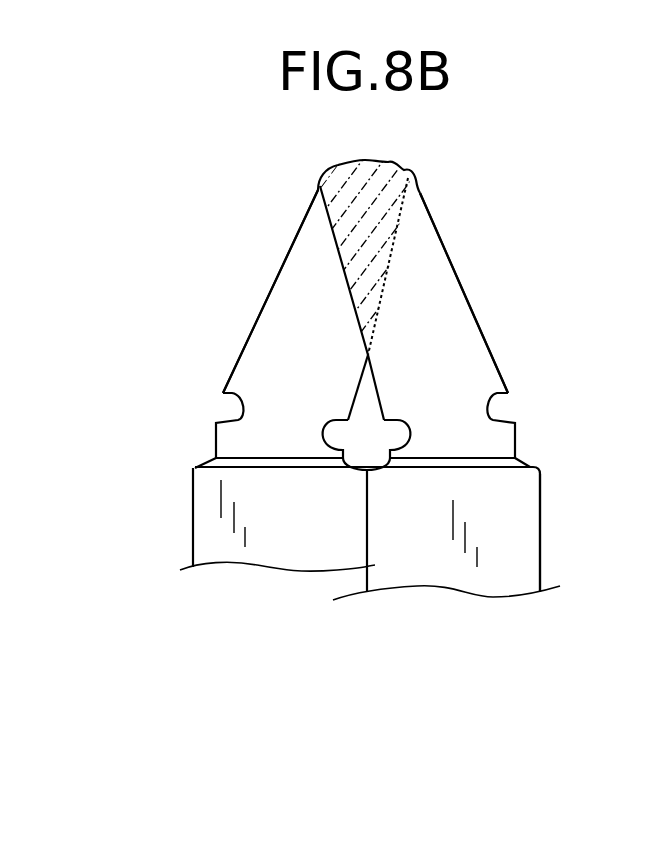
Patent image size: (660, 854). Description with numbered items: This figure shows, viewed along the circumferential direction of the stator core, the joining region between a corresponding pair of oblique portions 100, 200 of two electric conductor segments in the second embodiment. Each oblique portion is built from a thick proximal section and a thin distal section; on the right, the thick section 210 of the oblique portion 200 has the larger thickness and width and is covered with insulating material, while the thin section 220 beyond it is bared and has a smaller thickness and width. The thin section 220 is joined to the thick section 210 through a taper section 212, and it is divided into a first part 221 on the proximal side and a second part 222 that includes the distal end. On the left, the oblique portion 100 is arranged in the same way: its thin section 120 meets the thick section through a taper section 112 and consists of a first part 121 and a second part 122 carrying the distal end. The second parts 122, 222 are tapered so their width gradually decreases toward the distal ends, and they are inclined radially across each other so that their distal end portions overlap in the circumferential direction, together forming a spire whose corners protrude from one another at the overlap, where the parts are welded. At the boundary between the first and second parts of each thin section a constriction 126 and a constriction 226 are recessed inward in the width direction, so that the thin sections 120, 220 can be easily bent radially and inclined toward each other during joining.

The oblique portion 100 is at (256, 582).
The taper section 112 is at (214, 461).
The thin section 120 is at (146, 222).
The first part 121 is at (280, 447).
The second part 122 is at (297, 317).
The constriction 126 is at (338, 445).
The oblique portion 200 is at (446, 606).
The thick section 210 is at (543, 507).
The taper section 212 is at (505, 462).
The thin section 220 is at (560, 207).
The first part 221 is at (455, 445).
The second part 222 is at (418, 318).
The constriction 226 is at (497, 408).